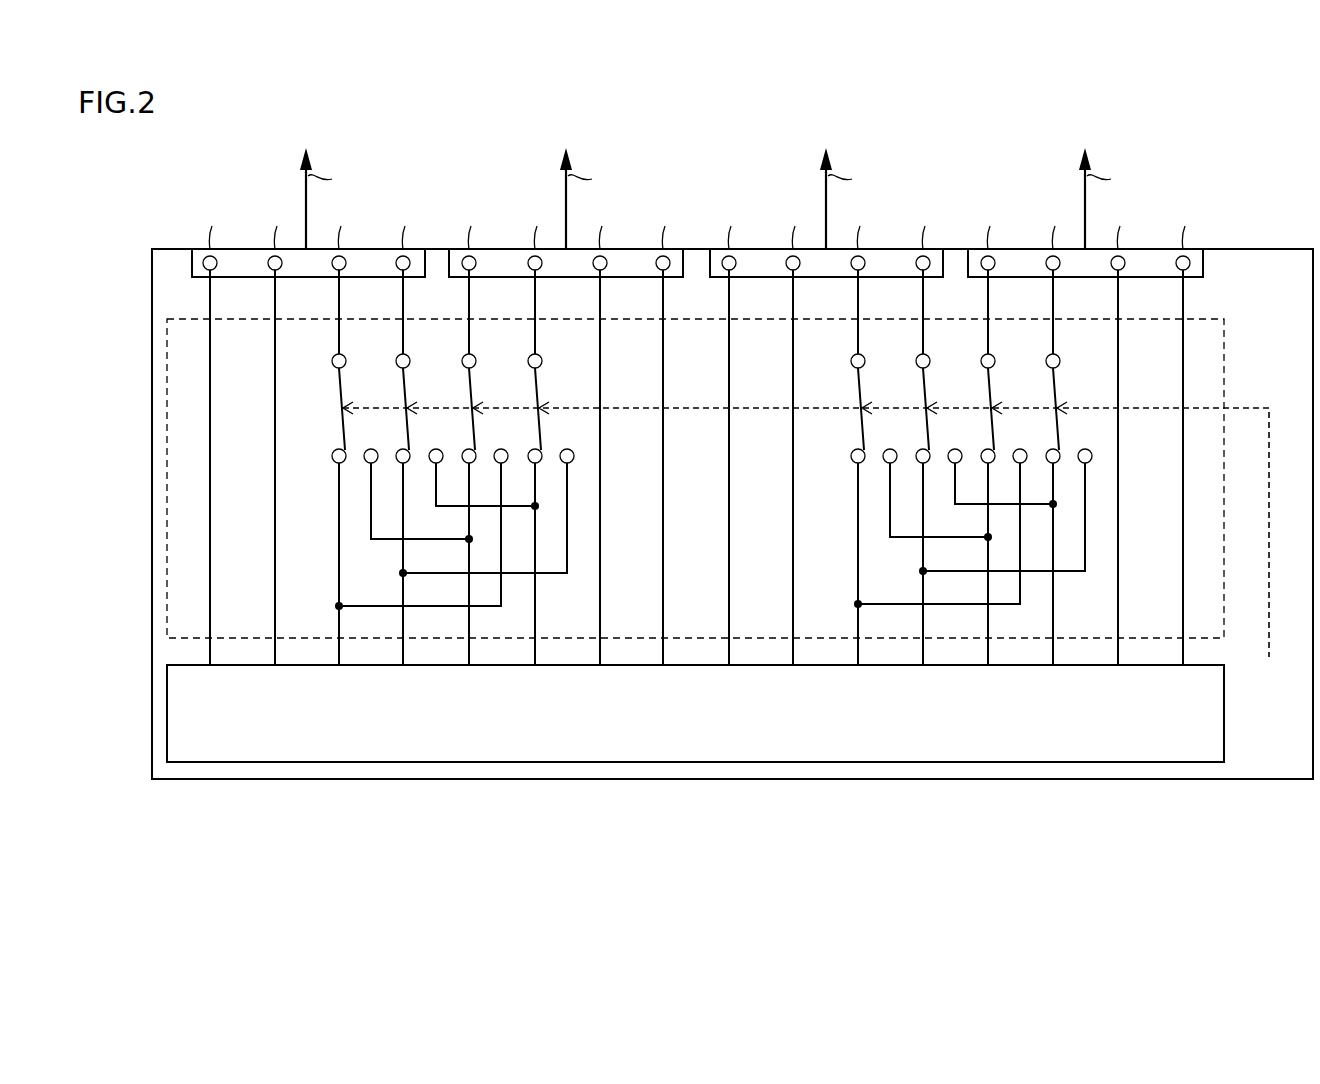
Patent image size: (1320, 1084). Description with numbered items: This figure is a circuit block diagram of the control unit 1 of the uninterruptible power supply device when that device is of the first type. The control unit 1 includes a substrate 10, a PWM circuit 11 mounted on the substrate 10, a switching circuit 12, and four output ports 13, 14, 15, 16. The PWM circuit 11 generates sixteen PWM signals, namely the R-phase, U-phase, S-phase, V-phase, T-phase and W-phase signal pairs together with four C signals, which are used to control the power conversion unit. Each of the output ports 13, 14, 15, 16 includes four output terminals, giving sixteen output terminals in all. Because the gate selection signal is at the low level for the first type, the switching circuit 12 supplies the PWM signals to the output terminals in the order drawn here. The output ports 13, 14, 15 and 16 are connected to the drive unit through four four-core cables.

The control unit 1 is at (150, 246).
The substrate 10 is at (152, 456).
The PWM circuit 11 is at (1224, 730).
The switching circuit 12 is at (1228, 343).
The output port 13 is at (192, 277).
The output port 14 is at (449, 277).
The output port 15 is at (710, 277).
The output port 16 is at (968, 277).